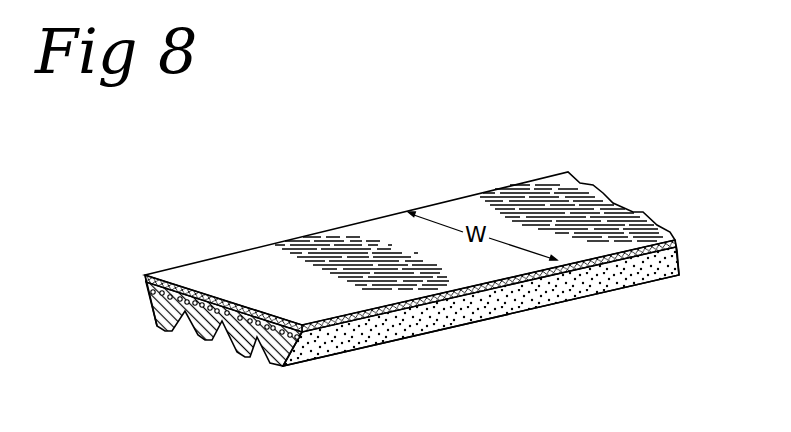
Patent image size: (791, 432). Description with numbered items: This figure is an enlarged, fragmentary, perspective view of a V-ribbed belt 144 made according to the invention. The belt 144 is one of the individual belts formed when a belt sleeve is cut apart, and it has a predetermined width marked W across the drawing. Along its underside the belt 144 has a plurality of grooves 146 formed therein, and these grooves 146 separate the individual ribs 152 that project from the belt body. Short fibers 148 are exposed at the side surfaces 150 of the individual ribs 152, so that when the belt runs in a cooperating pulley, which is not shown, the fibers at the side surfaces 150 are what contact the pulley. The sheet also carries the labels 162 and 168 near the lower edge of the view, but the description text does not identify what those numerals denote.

The V-ribbed belt 144 is at (377, 231).
The grooves 146 is at (177, 333).
The short fibers 148 is at (610, 285).
The side surfaces 150 is at (463, 322).
The ribs 152 is at (187, 307).
The tension member 162 is at (566, 421).
The belt portion 168 is at (645, 426).